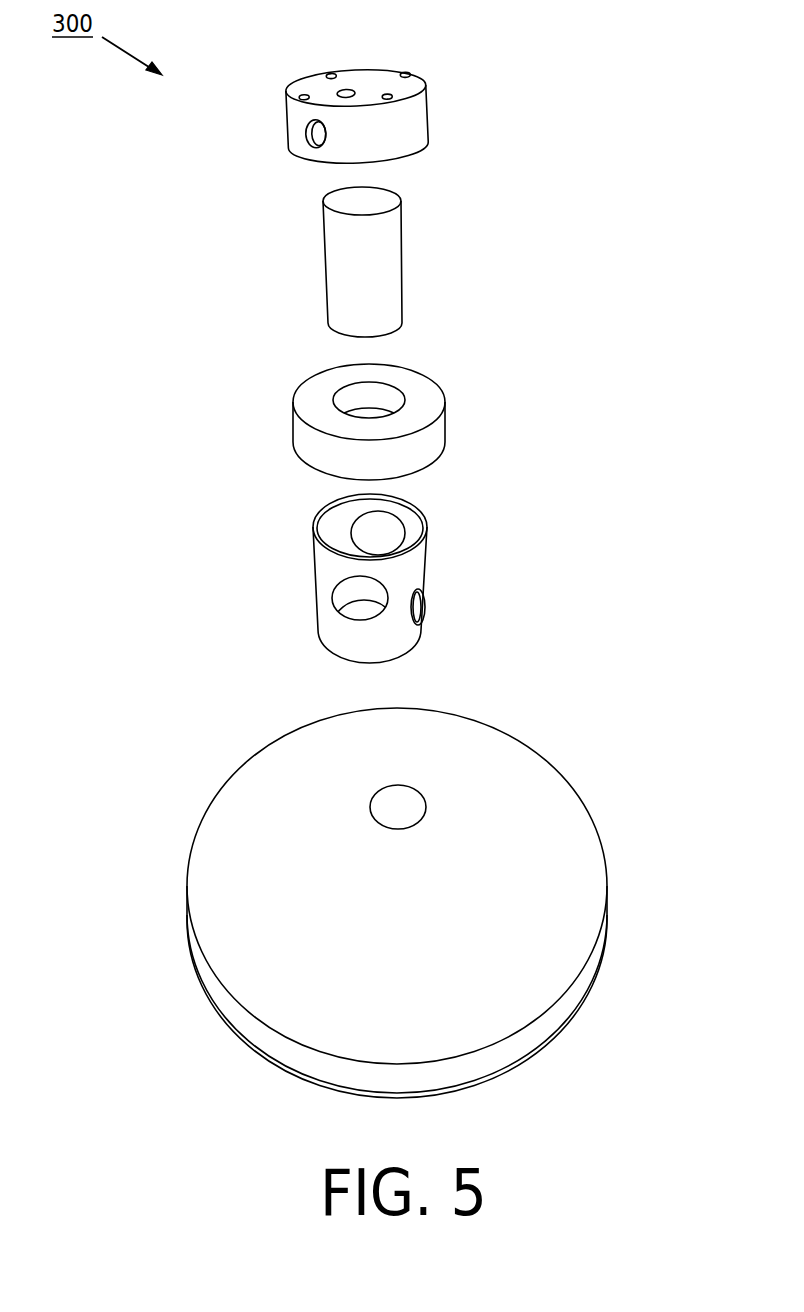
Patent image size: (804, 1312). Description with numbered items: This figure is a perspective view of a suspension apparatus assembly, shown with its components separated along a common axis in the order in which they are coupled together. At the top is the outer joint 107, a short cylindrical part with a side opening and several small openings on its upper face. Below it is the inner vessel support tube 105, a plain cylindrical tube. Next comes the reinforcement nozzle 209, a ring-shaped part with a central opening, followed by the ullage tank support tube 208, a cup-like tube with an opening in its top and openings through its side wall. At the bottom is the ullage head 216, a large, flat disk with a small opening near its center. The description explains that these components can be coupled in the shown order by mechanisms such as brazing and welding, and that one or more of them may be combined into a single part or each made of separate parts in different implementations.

The outer joint 107 is at (395, 126).
The inner vessel support tube 105 is at (392, 270).
The reinforcement nozzle 209 is at (407, 440).
The ullage tank support tube 208 is at (412, 569).
The ullage head 216 is at (440, 763).